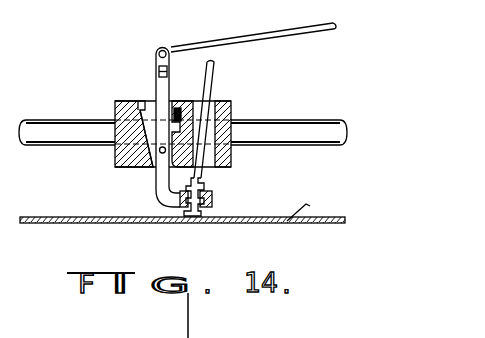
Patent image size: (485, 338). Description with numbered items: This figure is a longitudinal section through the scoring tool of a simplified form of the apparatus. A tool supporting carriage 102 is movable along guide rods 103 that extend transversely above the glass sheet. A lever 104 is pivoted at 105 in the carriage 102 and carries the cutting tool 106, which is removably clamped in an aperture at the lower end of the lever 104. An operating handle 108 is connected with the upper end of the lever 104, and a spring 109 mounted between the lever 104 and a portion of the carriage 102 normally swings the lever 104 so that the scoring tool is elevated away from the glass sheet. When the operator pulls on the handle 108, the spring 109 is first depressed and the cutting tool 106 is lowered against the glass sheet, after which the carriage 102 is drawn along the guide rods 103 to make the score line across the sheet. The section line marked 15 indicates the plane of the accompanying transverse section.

The tool supporting carriage 102 is at (133, 108).
The guide rods 103 is at (278, 133).
The lever 104 is at (163, 185).
The pivot 105 is at (157, 158).
The cutting tool 106 is at (200, 180).
The operating handle 108 is at (263, 38).
The spring 109 is at (176, 108).
The section line 15- 15 is at (170, 48).